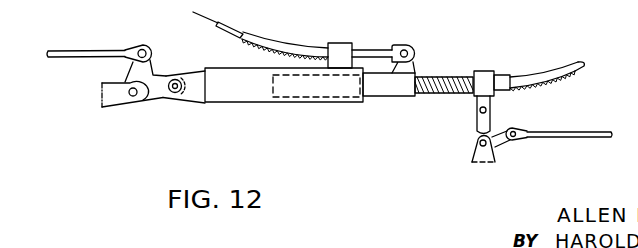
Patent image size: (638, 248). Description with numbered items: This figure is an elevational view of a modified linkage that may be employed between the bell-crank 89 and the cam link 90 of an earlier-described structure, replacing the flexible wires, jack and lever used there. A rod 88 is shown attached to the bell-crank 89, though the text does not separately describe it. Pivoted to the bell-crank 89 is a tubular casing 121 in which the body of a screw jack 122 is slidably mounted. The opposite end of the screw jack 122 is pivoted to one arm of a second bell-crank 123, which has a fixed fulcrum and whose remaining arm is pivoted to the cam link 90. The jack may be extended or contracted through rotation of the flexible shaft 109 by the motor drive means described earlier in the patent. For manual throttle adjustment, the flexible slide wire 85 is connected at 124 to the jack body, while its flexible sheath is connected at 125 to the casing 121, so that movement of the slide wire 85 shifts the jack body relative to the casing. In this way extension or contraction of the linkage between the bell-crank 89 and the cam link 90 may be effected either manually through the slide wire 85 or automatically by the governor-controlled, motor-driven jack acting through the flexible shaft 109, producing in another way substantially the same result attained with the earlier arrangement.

The flexible slide wire 85 is at (382, 50).
The rod 88 is at (97, 50).
The bell-crank 89 is at (161, 98).
The cam link 90 is at (572, 130).
The flexible shaft 109 is at (576, 61).
The tubular casing 121 is at (247, 97).
The screw jack 122 is at (379, 92).
The bell-crank 123 is at (476, 133).
The connection of slide wire to jack body 124 is at (408, 46).
The connection of sheath to casing 125 is at (340, 43).